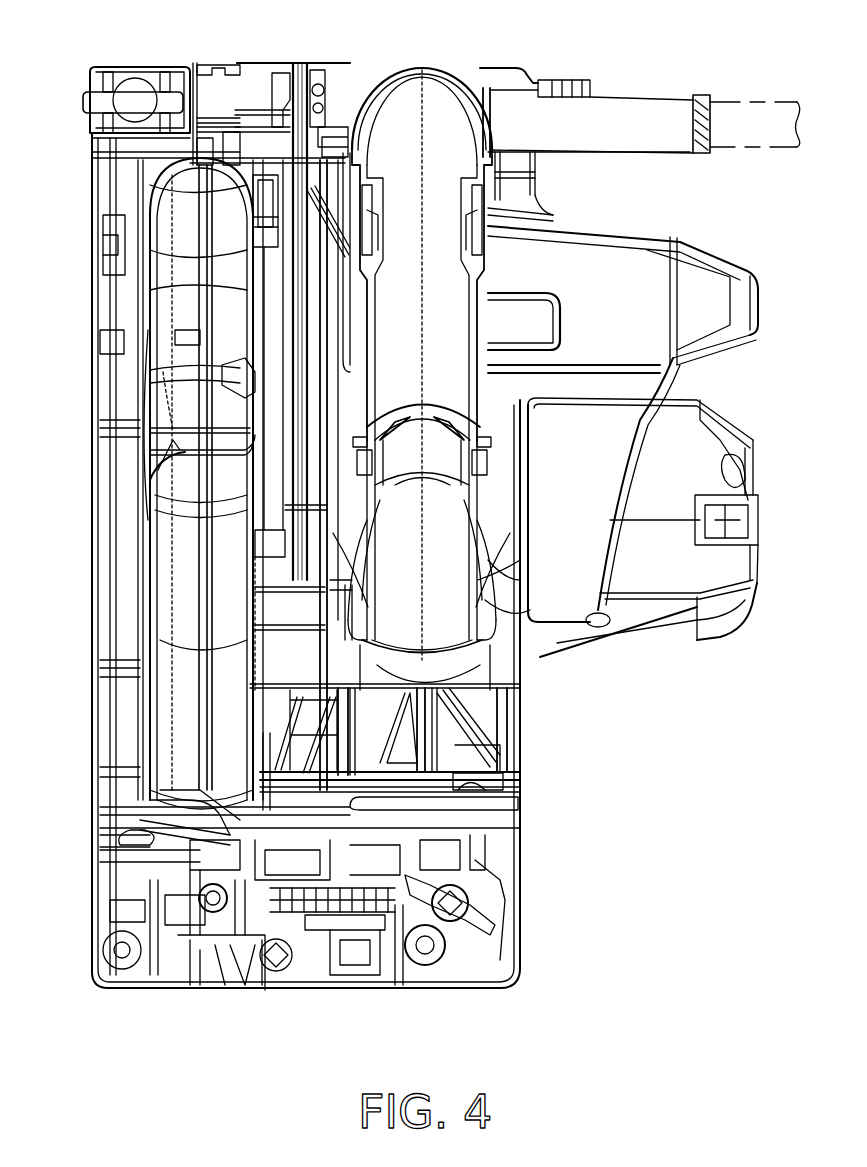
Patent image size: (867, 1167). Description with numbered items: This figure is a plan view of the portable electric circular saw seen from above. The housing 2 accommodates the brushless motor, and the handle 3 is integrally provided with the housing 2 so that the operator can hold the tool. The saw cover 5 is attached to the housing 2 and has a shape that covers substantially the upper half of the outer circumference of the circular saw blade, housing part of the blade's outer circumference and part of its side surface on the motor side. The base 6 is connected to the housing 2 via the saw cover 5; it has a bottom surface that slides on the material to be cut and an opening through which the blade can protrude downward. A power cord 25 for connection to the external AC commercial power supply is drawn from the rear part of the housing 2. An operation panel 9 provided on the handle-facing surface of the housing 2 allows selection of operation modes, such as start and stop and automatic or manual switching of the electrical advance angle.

The housing 2 is at (713, 258).
The handle 3 is at (445, 90).
The saw cover 5 is at (155, 605).
The base 6 is at (525, 950).
The operation panel 9 is at (548, 293).
The power cord 25 is at (733, 102).